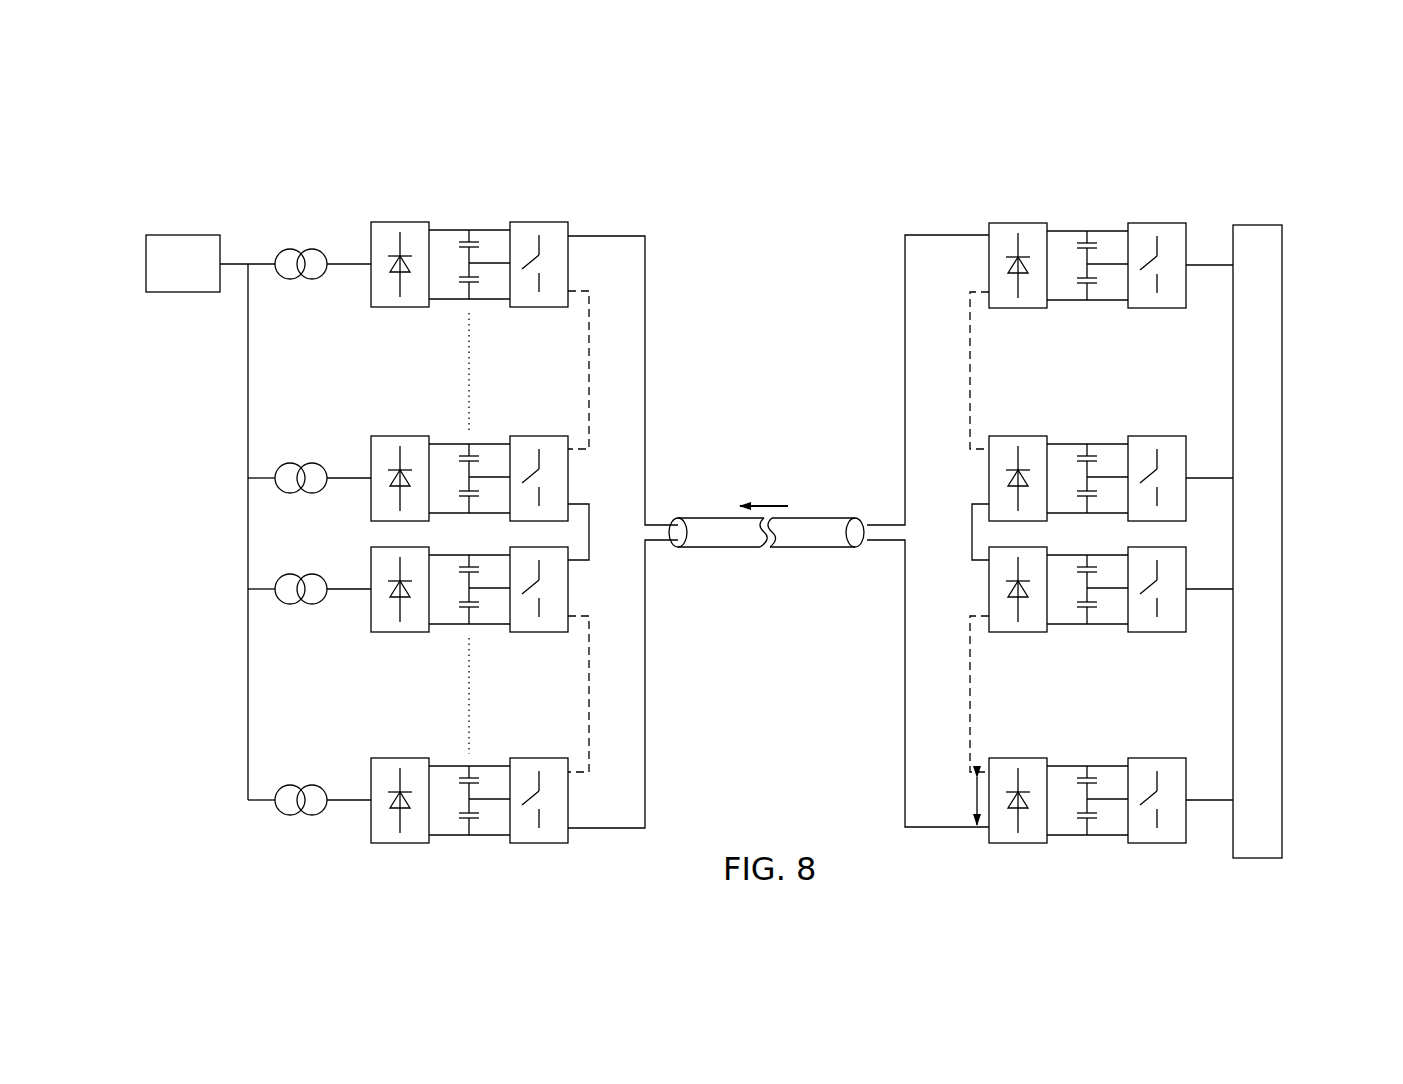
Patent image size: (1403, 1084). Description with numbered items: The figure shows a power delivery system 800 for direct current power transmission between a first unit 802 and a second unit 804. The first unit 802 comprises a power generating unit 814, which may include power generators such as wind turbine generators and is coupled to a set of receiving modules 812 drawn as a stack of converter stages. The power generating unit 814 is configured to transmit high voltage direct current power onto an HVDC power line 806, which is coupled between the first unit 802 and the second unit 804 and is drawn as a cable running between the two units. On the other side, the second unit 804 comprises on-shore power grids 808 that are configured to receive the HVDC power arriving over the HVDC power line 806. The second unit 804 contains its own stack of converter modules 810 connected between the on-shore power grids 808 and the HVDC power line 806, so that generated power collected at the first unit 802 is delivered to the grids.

The power delivery system 800 is at (1284, 141).
The first unit 802 is at (1320, 358).
The second unit 804 is at (207, 392).
The HVDC power line 806 is at (705, 517).
The on-shore power grids 808 is at (184, 234).
The converter module of second unit 810 is at (378, 318).
The receiving modules 812 is at (1132, 325).
The power generating unit 814 is at (1283, 587).